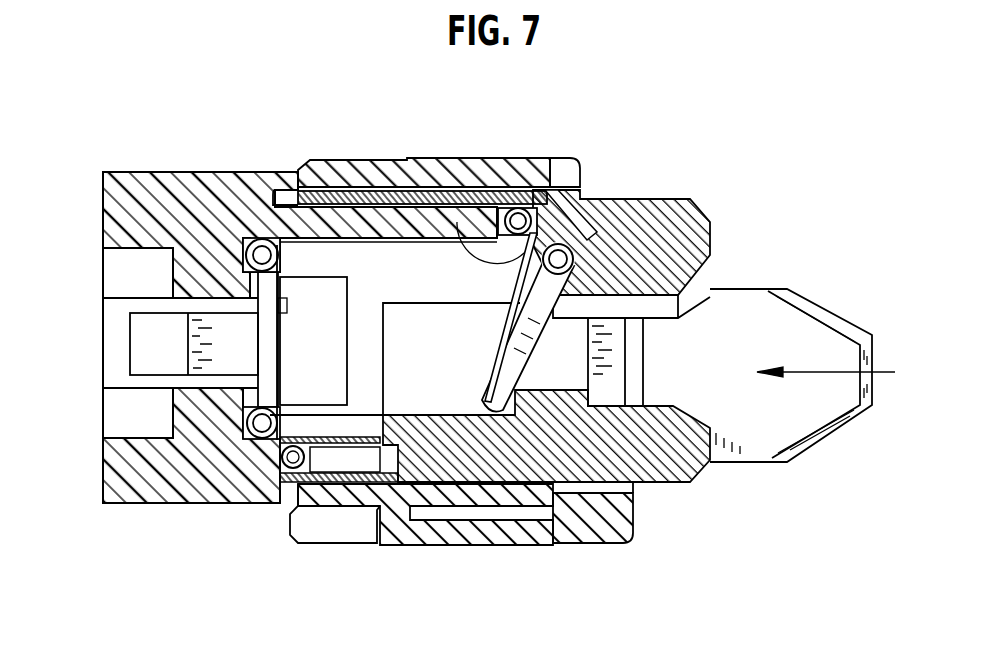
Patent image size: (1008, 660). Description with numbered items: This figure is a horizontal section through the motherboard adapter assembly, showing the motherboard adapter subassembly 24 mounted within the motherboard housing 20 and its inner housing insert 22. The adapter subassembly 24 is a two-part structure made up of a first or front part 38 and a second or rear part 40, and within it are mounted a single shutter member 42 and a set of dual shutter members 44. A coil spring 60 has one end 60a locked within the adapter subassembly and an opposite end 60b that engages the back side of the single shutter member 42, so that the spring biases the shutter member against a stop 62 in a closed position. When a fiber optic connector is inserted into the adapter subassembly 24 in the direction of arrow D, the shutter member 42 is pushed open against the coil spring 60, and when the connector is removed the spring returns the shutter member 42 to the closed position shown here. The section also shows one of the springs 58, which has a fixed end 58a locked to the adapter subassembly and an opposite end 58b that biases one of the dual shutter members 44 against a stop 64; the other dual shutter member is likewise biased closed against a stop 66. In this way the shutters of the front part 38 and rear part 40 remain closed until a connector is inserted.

The motherboard housing 20 is at (462, 190).
The inner housing insert 22 is at (605, 545).
The motherboard adapter subassembly 24 is at (103, 503).
The front part 38 is at (212, 172).
The rear part 40 is at (674, 468).
The single shutter member 42 is at (468, 368).
The dual shutter members 44 is at (258, 327).
The spring 58 is at (260, 445).
The fixed end 58a is at (330, 478).
The opposite end 58b is at (365, 190).
The coil spring 60 is at (572, 200).
The end 60a is at (500, 192).
The opposite end 60b is at (472, 192).
The stop 62 is at (493, 372).
The stop 64 is at (258, 380).
The stop 66 is at (258, 303).
The insertion direction arrow D is at (887, 372).